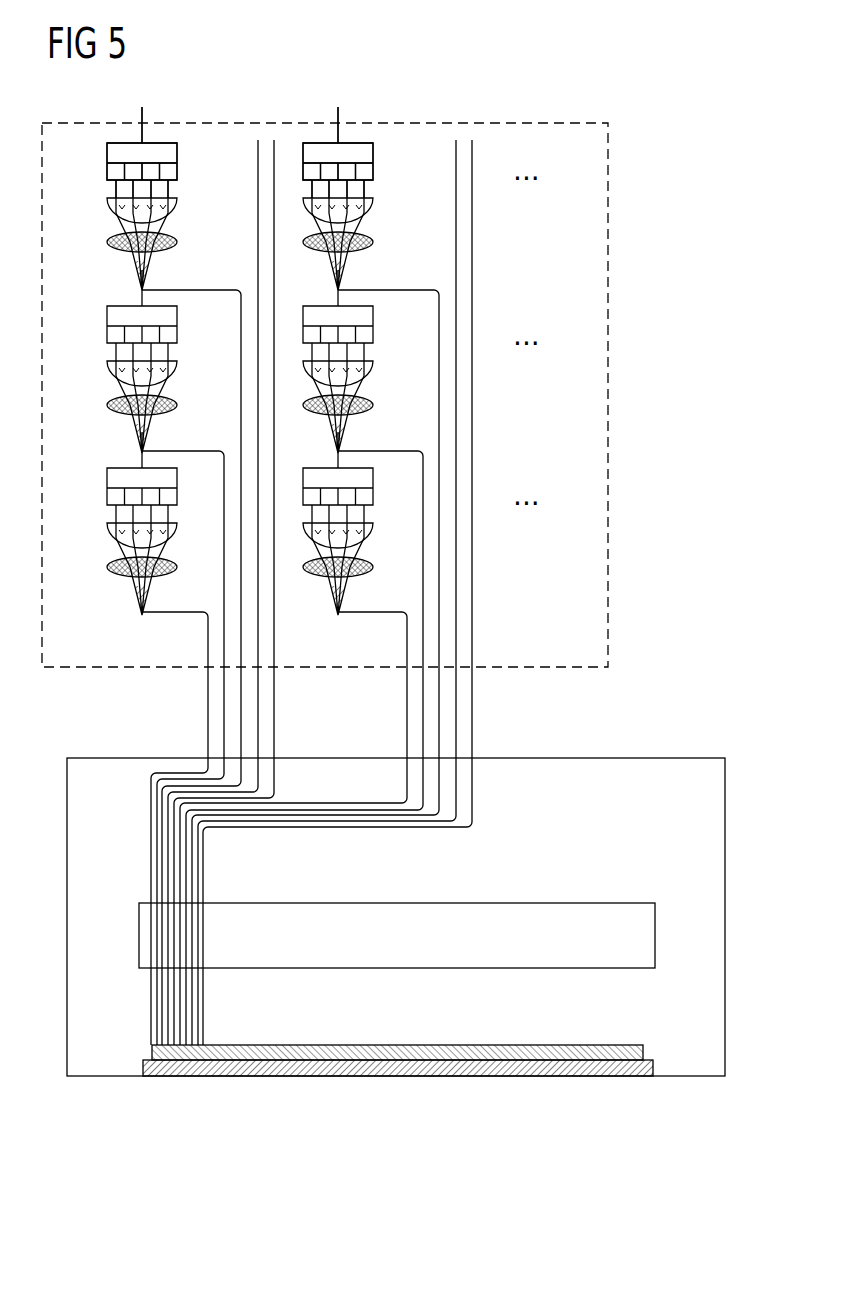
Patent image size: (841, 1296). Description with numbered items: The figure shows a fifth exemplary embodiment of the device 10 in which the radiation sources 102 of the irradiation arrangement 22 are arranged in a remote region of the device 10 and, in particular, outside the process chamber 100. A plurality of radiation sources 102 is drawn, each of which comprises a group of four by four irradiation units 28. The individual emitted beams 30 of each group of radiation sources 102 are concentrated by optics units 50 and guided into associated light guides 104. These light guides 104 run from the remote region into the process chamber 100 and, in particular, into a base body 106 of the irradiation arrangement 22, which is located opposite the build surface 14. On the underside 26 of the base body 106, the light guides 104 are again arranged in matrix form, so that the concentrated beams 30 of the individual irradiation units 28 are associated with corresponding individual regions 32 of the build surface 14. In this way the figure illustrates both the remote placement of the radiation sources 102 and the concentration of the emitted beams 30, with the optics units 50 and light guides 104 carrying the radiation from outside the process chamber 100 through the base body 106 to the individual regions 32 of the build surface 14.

The device 10 is at (676, 714).
The build surface 14 is at (645, 1032).
The irradiation arrangement 22 is at (126, 914).
The underside 26 is at (306, 980).
The irradiation units 28 is at (178, 172).
The emitted beams 30 is at (374, 173).
The individual regions 32 is at (172, 1052).
The optics units 50 is at (193, 208).
The process chamber 100 is at (577, 757).
The radiation sources 102 is at (325, 144).
The light guides 104 is at (208, 289).
The base body 106 is at (531, 903).